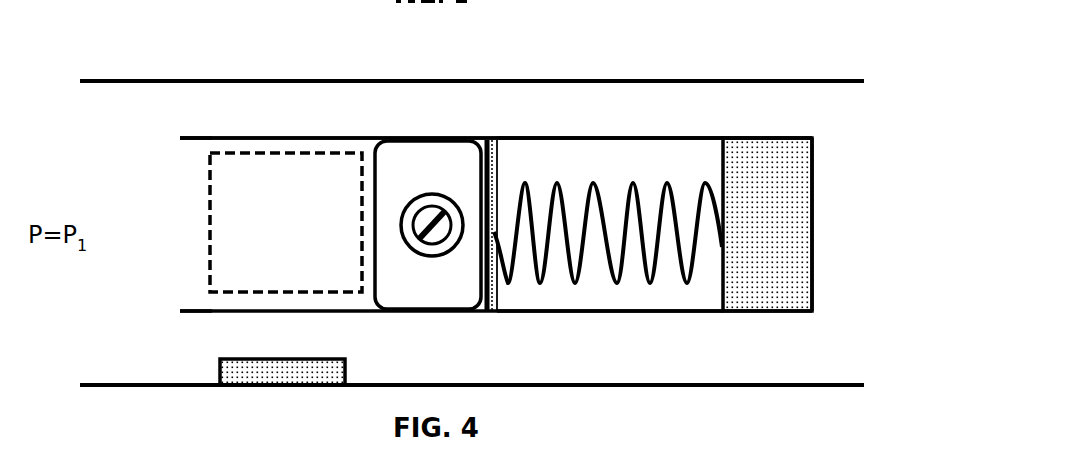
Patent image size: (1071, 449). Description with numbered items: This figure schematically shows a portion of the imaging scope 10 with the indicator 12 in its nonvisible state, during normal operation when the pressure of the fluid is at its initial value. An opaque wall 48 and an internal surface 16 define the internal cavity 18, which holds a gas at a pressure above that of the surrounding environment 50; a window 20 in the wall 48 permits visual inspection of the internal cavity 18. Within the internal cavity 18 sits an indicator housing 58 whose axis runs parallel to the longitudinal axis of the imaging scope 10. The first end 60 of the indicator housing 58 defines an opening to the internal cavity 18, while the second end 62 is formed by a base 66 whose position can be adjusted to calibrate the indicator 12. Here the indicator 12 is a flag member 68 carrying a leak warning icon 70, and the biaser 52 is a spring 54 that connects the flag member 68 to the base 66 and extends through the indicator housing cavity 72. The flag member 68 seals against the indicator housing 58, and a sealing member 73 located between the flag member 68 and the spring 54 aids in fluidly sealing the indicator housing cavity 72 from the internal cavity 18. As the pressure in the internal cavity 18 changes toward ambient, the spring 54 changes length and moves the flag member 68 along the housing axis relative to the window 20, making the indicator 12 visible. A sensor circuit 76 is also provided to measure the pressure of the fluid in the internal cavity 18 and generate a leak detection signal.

The imaging scope 10 is at (216, 50).
The indicator 12 is at (496, 171).
The internal surface 16 is at (750, 385).
The internal cavity 18 is at (699, 120).
The window 20 is at (235, 152).
The wall 48 is at (472, 215).
The surrounding environment 50 is at (699, 62).
The biaser 52 is at (608, 265).
The spring 54 is at (575, 284).
The indicator housing 58 is at (557, 138).
The first end 60 is at (151, 161).
The second end 62 is at (837, 159).
The base 66 is at (780, 157).
The flag member 68 is at (429, 155).
The leak warning icon 70 is at (435, 256).
The indicator housing cavity 72 is at (699, 172).
The sealing member 73 is at (492, 140).
The sensor circuit 76 is at (313, 378).